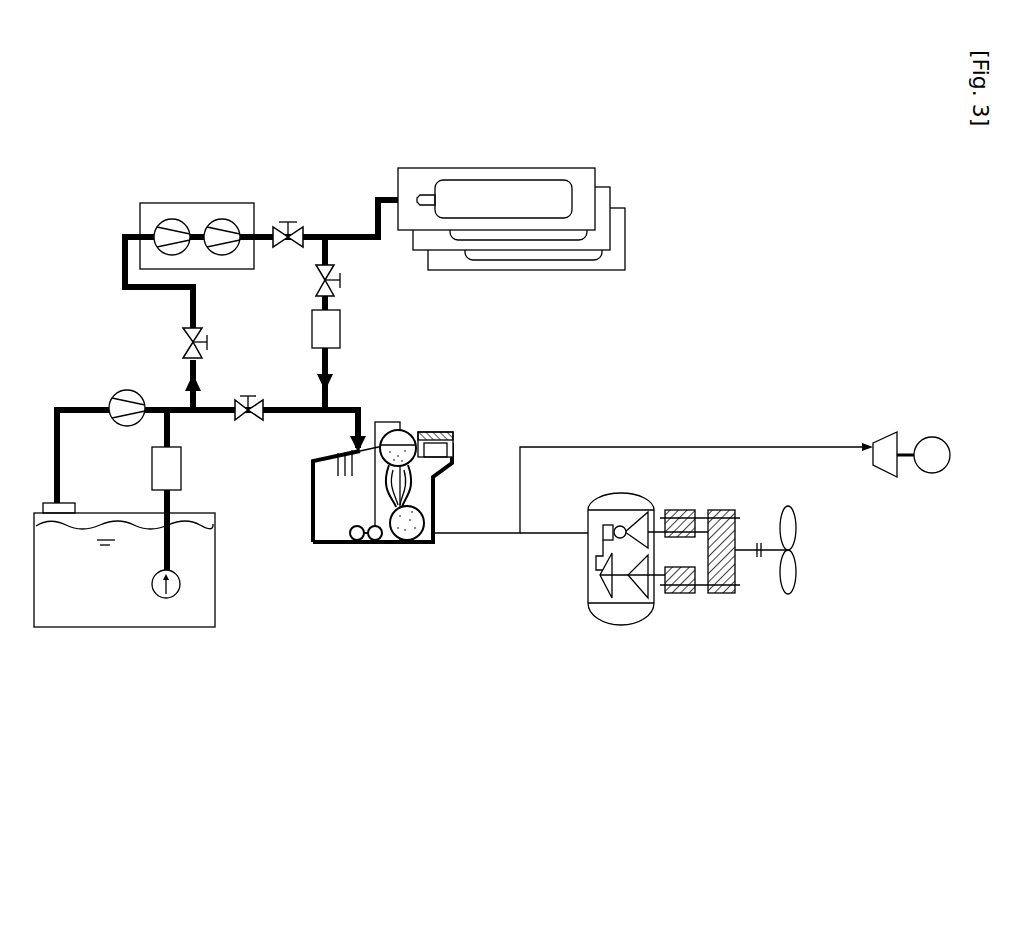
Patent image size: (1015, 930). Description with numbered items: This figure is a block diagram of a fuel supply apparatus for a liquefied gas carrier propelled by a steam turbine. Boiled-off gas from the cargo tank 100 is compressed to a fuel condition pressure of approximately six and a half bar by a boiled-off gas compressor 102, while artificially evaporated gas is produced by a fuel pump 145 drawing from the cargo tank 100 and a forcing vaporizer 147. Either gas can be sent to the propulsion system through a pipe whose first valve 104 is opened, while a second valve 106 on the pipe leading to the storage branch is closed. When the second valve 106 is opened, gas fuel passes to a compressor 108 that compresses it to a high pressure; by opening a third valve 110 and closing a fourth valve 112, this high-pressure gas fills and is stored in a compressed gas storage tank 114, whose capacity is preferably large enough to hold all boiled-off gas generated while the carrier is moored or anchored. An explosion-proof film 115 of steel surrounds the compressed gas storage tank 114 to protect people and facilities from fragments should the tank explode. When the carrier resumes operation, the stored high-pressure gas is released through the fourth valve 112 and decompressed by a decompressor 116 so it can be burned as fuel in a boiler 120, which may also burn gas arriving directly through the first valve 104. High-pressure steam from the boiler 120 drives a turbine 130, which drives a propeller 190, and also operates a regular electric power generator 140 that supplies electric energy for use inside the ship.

The cargo tank 100 is at (216, 599).
The boiled-off gas compressor 102 is at (117, 394).
The first valve 104 is at (249, 421).
The second valve 106 is at (183, 342).
The compressor 108 is at (166, 203).
The third valve 110 is at (284, 224).
The fourth valve 112 is at (340, 268).
The compressed gas storage tank 114 is at (545, 175).
The explosion-proof film 115 is at (580, 187).
The decompressor 116 is at (341, 325).
The boiler 120 is at (405, 430).
The turbine 130 is at (640, 620).
The regular electric power generator 140 is at (881, 441).
The fuel pump 145 is at (172, 596).
The forcing vaporizer 147 is at (152, 470).
The propeller 190 is at (795, 530).